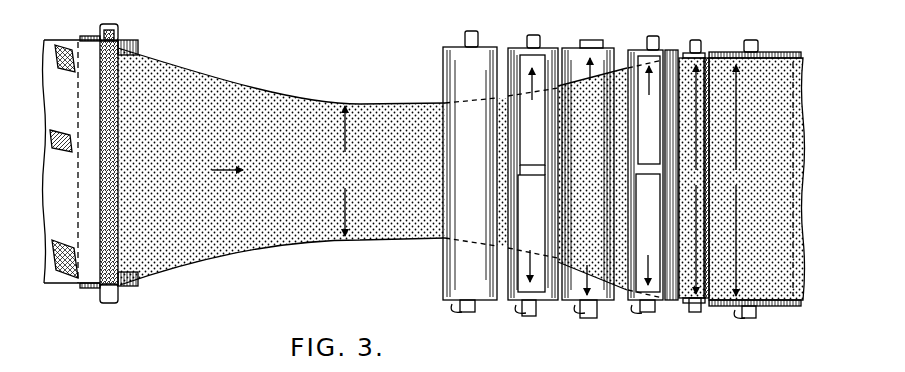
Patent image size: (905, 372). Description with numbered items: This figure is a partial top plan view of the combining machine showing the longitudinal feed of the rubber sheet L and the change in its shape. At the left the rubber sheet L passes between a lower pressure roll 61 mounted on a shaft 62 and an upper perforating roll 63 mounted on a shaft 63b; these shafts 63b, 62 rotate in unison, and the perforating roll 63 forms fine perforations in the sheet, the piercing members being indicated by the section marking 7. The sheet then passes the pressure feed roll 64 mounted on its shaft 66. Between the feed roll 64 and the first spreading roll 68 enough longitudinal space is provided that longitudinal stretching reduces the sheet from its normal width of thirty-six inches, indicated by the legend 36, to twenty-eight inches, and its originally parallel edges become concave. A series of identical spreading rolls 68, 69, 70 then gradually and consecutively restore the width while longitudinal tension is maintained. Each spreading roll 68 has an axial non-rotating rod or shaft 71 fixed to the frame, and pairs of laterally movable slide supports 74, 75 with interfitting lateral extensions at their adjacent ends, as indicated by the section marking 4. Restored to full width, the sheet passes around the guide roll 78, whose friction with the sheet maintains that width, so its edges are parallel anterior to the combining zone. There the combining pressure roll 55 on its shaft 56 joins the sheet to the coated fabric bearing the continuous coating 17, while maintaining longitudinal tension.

The normal width of the rubber sheet 36 is at (22, 42).
The section line 7 is at (60, 222).
The shaft 62 is at (103, 25).
The shaft 63b is at (112, 36).
The lower pressure roll 61 is at (126, 44).
The perforating roll 63 is at (117, 68).
The rubber sheet L is at (382, 104).
The pressure feed roll 64 is at (442, 287).
The shaft 66 is at (467, 313).
The spreading roll 68 is at (516, 44).
The spreading roll 69 is at (578, 44).
The spreading roll 70 is at (637, 44).
The slide support 74 is at (541, 57).
The rod or shaft 71 is at (528, 318).
The slide support 75 is at (521, 302).
The section line 4 is at (593, 42).
The guide roll 78 is at (695, 312).
The continuous coating 17 is at (801, 62).
The combining pressure roll 55 is at (776, 54).
The shaft 56 is at (749, 41).